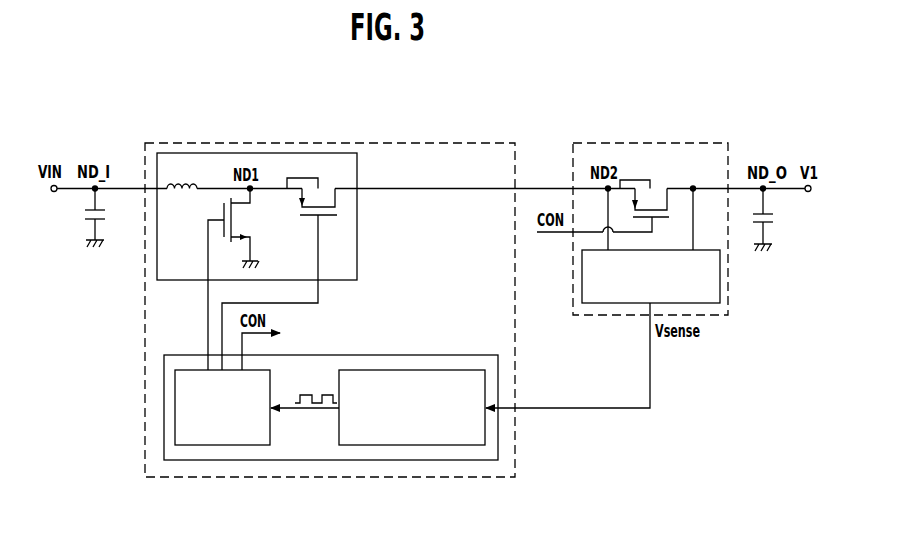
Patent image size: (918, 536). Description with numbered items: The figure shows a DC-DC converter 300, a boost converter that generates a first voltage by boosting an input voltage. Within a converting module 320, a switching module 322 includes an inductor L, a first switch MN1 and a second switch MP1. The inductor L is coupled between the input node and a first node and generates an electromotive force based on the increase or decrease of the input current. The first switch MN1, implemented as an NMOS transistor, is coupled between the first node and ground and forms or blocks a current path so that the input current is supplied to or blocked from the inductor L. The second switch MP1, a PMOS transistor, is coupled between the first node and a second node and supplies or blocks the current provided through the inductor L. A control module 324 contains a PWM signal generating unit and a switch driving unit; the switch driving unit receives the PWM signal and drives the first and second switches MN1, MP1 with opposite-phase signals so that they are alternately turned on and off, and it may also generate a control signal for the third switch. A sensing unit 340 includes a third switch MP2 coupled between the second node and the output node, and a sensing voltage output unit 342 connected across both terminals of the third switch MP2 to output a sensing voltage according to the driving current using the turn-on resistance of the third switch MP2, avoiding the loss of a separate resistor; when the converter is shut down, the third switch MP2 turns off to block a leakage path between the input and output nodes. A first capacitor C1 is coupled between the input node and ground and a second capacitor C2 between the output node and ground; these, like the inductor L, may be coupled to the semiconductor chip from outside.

The DC-DC converter 300 is at (647, 65).
The converting module 320 is at (410, 143).
The switching module 322 is at (357, 256).
The control module 324 is at (389, 355).
The sensing unit 340 is at (663, 143).
The sensing voltage output unit 342 is at (720, 281).
The inductor L is at (182, 174).
The first capacitor C1 is at (86, 218).
The second capacitor C2 is at (774, 220).
The first switch MN1 is at (249, 280).
The second switch MP1 is at (283, 268).
The third switch MP2 is at (607, 197).